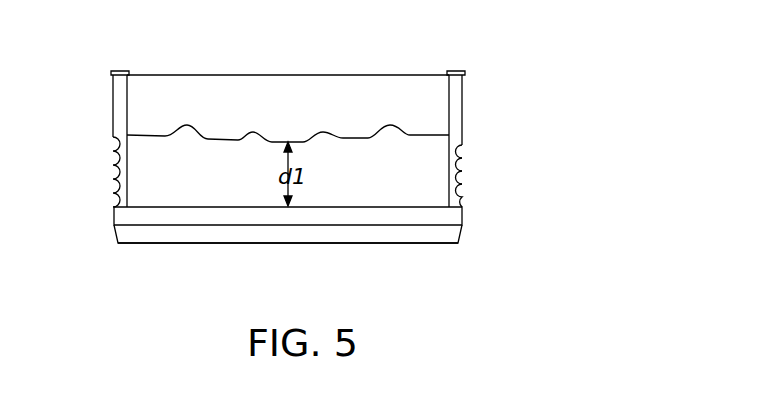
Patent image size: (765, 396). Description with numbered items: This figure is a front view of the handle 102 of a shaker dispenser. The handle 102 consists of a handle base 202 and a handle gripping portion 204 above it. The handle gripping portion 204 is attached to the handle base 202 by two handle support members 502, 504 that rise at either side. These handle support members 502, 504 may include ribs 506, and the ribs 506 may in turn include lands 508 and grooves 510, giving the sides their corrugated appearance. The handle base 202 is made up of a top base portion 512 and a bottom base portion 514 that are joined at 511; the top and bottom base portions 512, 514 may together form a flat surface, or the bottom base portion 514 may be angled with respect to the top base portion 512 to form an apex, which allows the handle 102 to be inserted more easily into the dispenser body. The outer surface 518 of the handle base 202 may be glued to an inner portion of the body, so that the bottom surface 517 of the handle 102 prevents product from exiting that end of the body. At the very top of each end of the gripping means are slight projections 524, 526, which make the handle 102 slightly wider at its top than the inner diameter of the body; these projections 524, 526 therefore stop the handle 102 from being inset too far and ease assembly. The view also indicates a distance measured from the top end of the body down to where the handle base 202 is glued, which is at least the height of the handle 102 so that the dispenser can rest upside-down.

The handle 102 is at (343, 72).
The handle base 202 is at (114, 228).
The handle gripping portion 204 is at (224, 95).
The handle support member 502 is at (113, 155).
The handle support member 504 is at (465, 171).
The ribs 506 is at (465, 197).
The lands 508 is at (465, 146).
The grooves 510 is at (463, 184).
The joint of top and bottom base portions 511 is at (413, 228).
The top base portion 512 is at (114, 217).
The bottom base portion 514 is at (157, 236).
The bottom surface 517 is at (214, 249).
The outer surface 518 is at (333, 235).
The projection 524 is at (113, 71).
The projection 526 is at (465, 71).